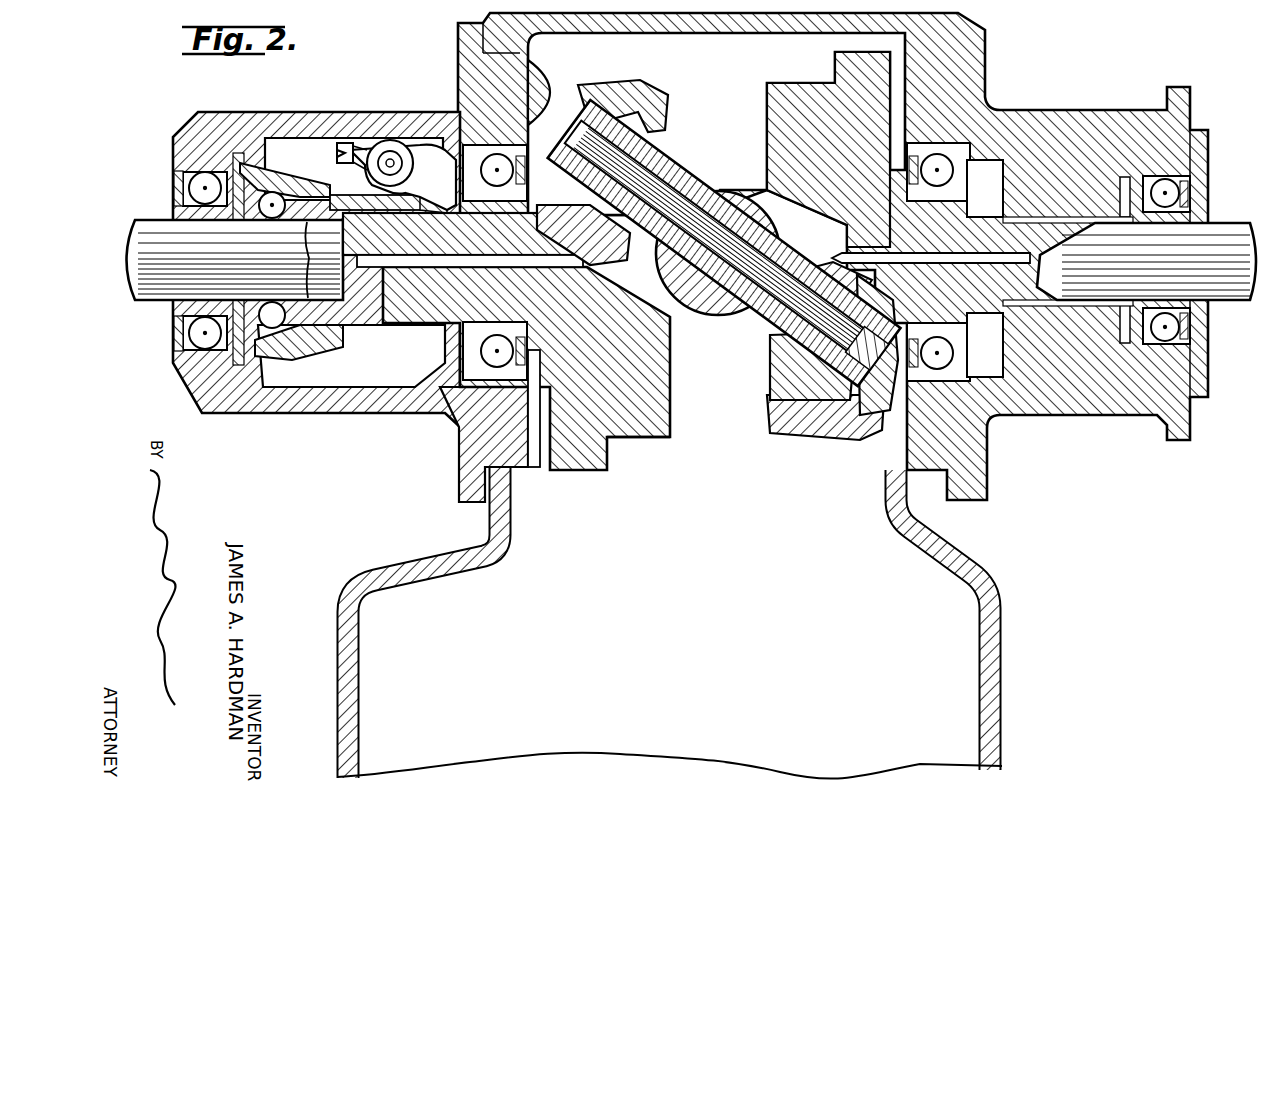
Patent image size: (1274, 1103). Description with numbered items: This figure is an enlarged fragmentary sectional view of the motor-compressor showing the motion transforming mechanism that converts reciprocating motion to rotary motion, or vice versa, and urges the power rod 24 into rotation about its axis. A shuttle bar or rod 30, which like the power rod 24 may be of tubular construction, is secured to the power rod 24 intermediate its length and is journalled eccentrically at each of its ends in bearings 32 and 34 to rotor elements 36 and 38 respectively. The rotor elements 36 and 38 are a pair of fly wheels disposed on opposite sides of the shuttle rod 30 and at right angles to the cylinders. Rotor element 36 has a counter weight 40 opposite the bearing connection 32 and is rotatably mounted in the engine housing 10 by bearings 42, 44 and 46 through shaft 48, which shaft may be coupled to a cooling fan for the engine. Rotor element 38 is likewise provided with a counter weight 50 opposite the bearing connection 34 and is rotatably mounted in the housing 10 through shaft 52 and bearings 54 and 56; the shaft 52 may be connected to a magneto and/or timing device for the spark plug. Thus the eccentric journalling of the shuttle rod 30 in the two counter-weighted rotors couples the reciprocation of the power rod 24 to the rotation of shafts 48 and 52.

The engine housing 10 is at (386, 552).
The power rod 24 is at (712, 312).
The shuttle bar or rod 30 is at (764, 324).
The bearing 32 is at (660, 126).
The bearing 34 is at (770, 402).
The rotor element 36 is at (614, 445).
The rotor element 38 is at (762, 80).
The counter weight 40 is at (663, 445).
The bearing 42 is at (172, 164).
The bearing 44 is at (274, 198).
The bearing 46 is at (490, 158).
The shaft 48 is at (152, 300).
The counter weight 50 is at (820, 82).
The shaft 52 is at (1224, 296).
The bearing 54 is at (939, 172).
The bearing 56 is at (1208, 158).